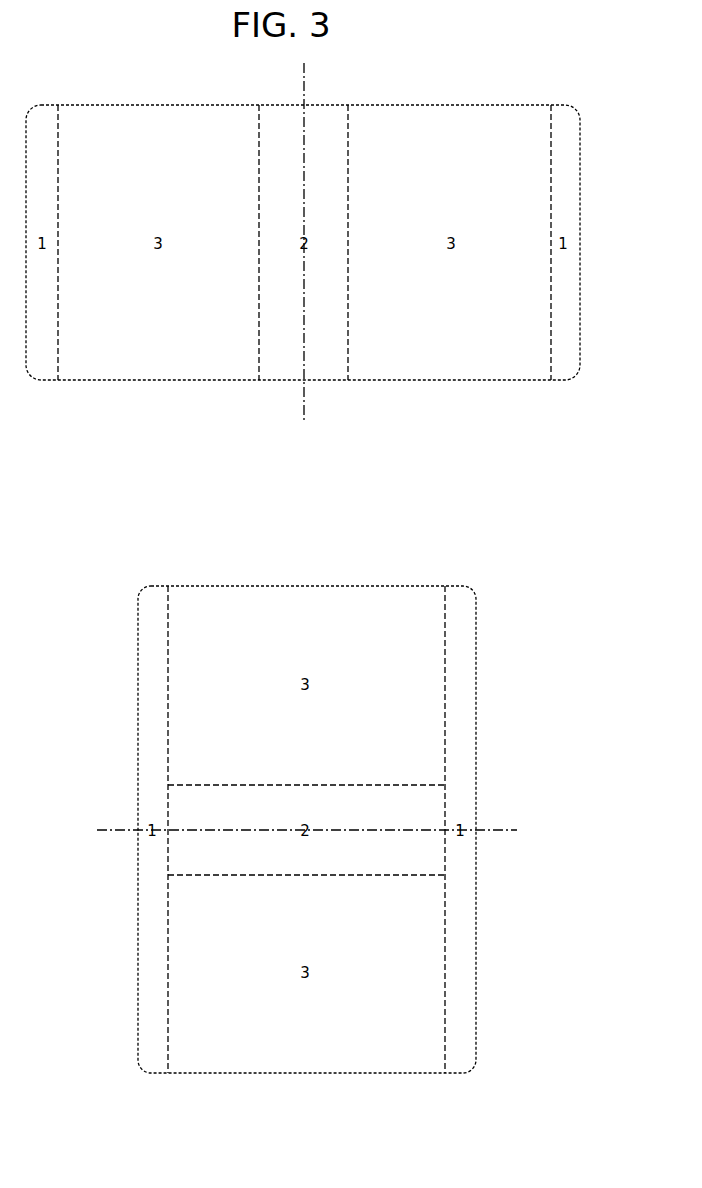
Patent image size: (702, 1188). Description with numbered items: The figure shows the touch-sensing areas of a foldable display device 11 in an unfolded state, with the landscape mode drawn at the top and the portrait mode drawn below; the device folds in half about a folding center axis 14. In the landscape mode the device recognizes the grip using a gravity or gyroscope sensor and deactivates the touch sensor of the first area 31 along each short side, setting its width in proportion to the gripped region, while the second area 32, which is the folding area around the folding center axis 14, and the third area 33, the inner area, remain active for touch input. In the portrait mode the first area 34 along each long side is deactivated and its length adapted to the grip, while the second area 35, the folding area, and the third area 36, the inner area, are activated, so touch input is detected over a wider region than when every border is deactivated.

The foldable display device 11 is at (474, 382).
The folding center axis 14 is at (305, 403).
The first area 31 is at (42, 128).
The second area 32 is at (283, 128).
The third area 33 is at (165, 128).
The first area 34 is at (152, 608).
The second area 35 is at (422, 857).
The third area 36 is at (305, 608).